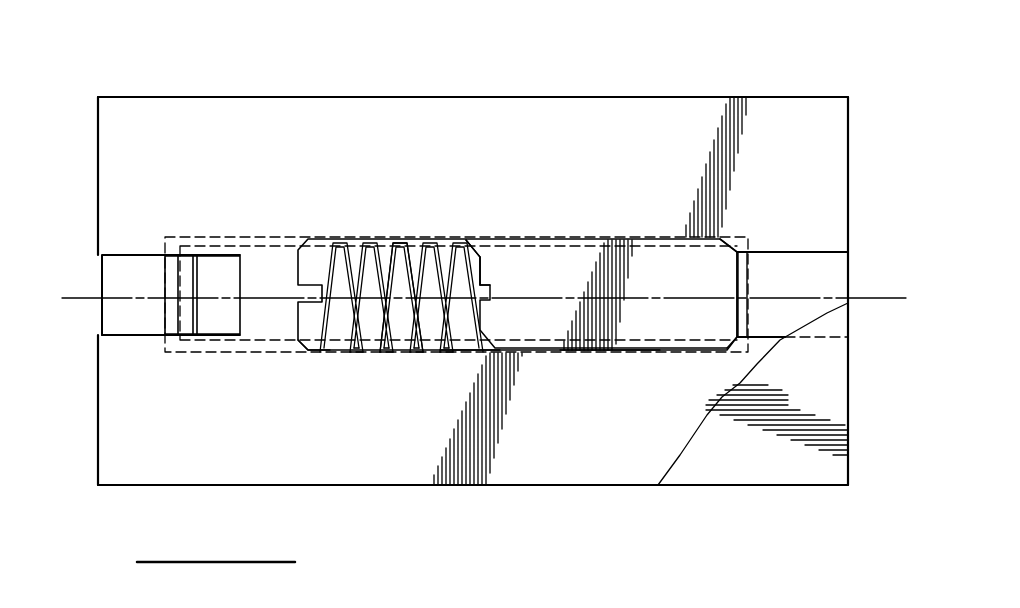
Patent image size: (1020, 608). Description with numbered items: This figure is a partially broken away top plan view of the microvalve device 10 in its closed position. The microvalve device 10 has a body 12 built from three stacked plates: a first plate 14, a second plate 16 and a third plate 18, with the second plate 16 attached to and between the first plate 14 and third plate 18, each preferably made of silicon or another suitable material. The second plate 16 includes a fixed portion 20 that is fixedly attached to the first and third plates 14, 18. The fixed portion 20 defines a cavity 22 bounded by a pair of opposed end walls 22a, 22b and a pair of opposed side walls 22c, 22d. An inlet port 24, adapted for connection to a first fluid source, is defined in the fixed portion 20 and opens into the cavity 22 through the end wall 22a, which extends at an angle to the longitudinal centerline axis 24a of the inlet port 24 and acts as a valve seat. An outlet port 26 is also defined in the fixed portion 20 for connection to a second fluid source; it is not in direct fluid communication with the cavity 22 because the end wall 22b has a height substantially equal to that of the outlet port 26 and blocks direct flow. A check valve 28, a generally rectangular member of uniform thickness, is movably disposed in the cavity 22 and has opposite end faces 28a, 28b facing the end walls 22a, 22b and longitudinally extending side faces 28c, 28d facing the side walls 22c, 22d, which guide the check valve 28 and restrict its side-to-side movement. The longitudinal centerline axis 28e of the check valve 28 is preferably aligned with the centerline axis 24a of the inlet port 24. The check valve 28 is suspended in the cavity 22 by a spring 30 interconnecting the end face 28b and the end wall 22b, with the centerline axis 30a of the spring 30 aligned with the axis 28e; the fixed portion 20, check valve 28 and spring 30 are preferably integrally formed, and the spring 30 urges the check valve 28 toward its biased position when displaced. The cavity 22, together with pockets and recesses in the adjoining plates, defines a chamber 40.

The microvalve device 10 is at (82, 227).
The body 12 is at (835, 96).
The first plate 14 is at (102, 318).
The second plate 16 is at (370, 97).
The third plate 18 is at (845, 462).
The fixed portion 20 is at (322, 471).
The cavity 22 is at (330, 240).
The end wall 22a is at (708, 352).
The end wall 22b is at (306, 344).
The side wall 22c is at (494, 248).
The side wall 22d is at (462, 356).
The inlet port 24 is at (838, 270).
The longitudinal centerline axis 24a is at (866, 300).
The outlet port 26 is at (103, 283).
The check valve 28 is at (683, 328).
The end face 28a is at (750, 267).
The end face 28b is at (467, 268).
The side face 28c is at (681, 235).
The side face 28d is at (606, 358).
The longitudinal centerline axis 28e is at (562, 288).
The spring 30 is at (353, 352).
The centerline axis 30a is at (407, 356).
The chamber 40 is at (303, 263).